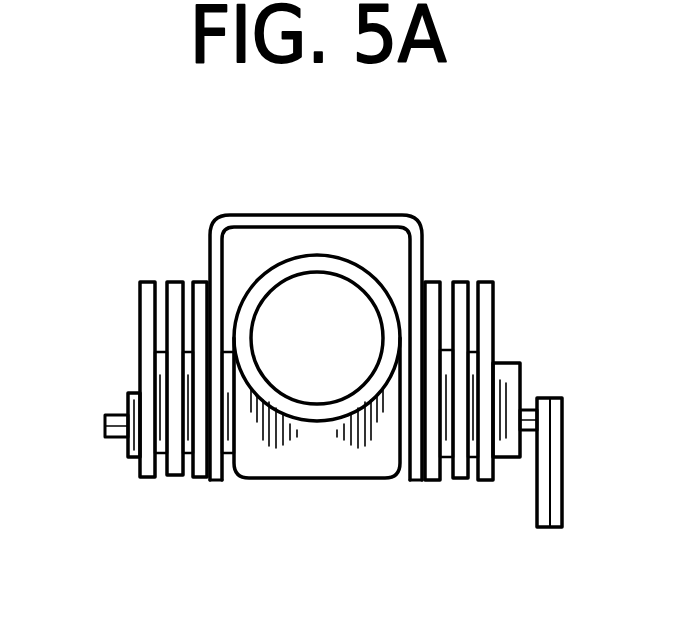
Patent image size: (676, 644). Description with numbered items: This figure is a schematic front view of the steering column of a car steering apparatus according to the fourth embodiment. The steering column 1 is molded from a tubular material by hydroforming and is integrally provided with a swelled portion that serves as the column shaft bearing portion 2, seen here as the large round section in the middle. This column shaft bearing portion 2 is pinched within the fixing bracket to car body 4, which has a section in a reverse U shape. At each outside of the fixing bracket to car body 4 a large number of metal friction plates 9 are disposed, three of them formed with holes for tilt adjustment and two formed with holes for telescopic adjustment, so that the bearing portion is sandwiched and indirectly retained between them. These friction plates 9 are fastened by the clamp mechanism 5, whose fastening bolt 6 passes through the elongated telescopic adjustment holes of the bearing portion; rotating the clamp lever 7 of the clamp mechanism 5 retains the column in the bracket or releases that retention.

The steering column 1 is at (340, 256).
The column shaft bearing portion 2 is at (309, 478).
The fixing bracket to car body 4 is at (304, 214).
The clamp mechanism 5 is at (502, 363).
The fastening bolt 6 is at (107, 438).
The clamp lever 7 is at (546, 528).
The friction plates 9 is at (188, 283).